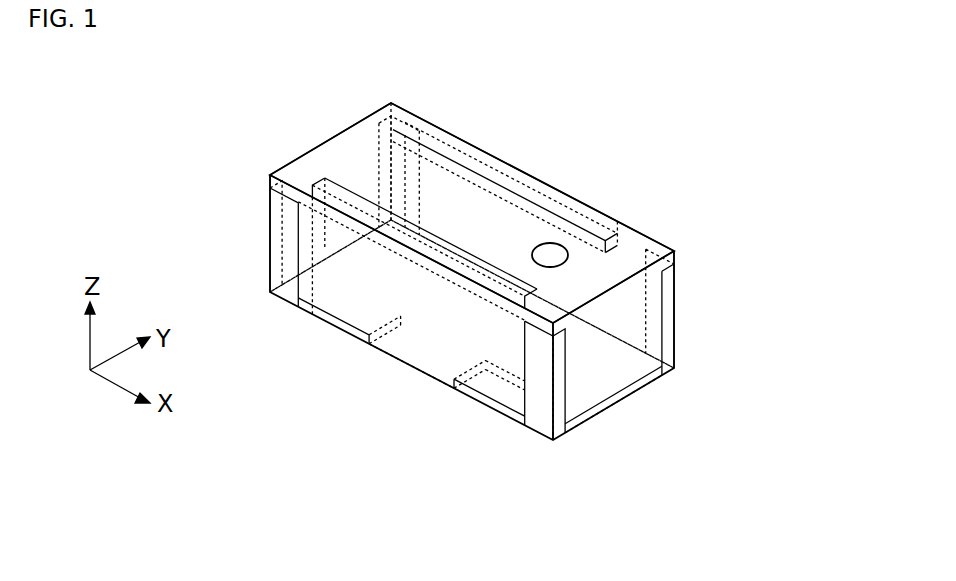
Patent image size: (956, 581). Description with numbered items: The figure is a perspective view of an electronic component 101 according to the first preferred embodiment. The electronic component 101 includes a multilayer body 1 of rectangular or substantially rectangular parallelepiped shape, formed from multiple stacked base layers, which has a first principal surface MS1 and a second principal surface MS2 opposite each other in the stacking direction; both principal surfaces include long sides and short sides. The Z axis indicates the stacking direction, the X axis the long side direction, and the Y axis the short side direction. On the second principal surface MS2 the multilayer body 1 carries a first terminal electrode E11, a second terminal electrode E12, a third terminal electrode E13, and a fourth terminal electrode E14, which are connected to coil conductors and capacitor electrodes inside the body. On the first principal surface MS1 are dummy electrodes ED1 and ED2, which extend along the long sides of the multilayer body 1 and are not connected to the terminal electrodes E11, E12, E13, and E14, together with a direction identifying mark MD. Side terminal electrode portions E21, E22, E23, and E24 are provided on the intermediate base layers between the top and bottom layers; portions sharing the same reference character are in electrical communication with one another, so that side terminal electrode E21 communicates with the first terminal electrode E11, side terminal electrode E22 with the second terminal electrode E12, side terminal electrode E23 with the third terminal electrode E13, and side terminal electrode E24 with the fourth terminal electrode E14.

The multilayer body 1 is at (329, 158).
The electronic component 101 is at (722, 101).
The first principal surface MS1 is at (480, 217).
The second principal surface MS2 is at (440, 338).
The dummy electrode ED1 is at (526, 182).
The dummy electrode ED2 is at (508, 283).
The direction identifying mark MD is at (553, 256).
The first terminal electrode E11 is at (318, 311).
The second terminal electrode E12 is at (506, 420).
The third terminal electrode E13 is at (438, 275).
The fourth terminal electrode E14 is at (672, 370).
The side terminal electrode portion E21 is at (277, 247).
The side terminal electrode portion E22 is at (562, 370).
The side terminal electrode portion E23 is at (402, 137).
The side terminal electrode portion E24 is at (664, 335).